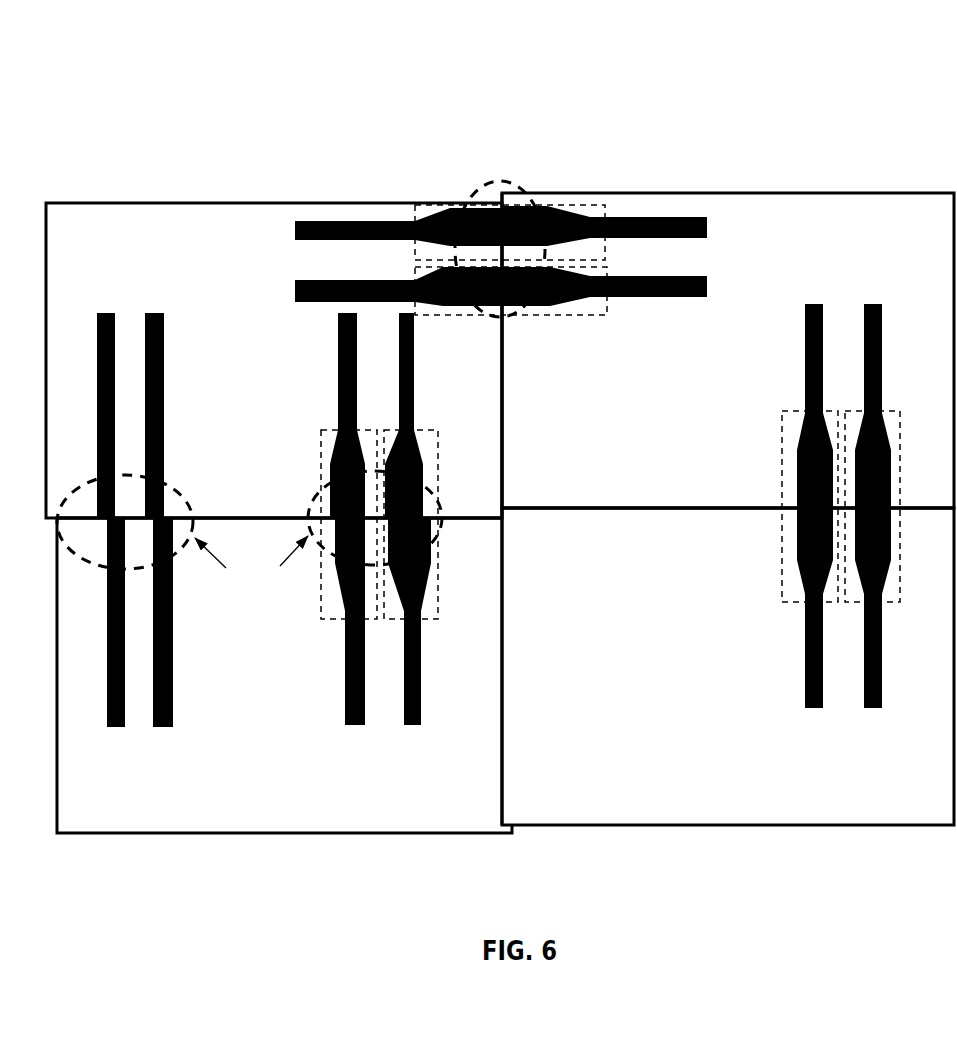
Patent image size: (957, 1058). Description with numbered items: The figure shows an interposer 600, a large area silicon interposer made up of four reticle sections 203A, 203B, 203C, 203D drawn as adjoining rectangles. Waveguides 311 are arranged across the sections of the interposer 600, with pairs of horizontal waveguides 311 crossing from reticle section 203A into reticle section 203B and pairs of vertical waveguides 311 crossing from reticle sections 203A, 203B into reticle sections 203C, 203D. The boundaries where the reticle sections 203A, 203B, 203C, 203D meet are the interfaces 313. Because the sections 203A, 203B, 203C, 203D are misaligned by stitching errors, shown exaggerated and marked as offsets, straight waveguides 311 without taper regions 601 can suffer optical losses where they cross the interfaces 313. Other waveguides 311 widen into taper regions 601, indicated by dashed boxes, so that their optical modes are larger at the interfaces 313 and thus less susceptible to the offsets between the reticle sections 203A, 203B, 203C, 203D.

The interposer 600 is at (126, 122).
The reticle section 203A is at (125, 245).
The reticle section 203B is at (928, 240).
The reticle section 203C is at (127, 815).
The reticle section 203D is at (942, 802).
The waveguides 311 is at (396, 385).
The interfaces 313 is at (505, 408).
The taper regions 601 is at (604, 264).